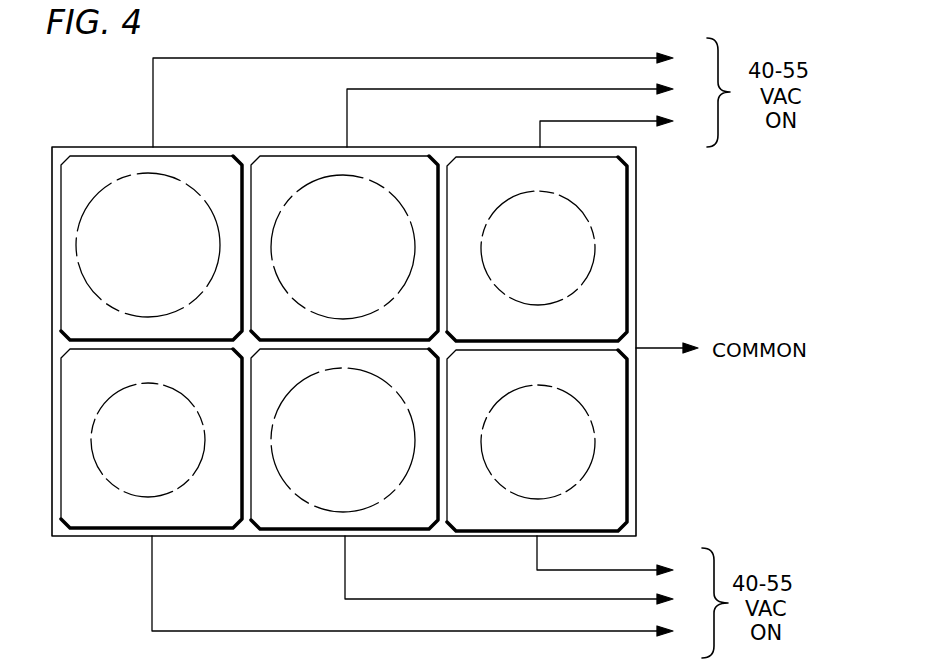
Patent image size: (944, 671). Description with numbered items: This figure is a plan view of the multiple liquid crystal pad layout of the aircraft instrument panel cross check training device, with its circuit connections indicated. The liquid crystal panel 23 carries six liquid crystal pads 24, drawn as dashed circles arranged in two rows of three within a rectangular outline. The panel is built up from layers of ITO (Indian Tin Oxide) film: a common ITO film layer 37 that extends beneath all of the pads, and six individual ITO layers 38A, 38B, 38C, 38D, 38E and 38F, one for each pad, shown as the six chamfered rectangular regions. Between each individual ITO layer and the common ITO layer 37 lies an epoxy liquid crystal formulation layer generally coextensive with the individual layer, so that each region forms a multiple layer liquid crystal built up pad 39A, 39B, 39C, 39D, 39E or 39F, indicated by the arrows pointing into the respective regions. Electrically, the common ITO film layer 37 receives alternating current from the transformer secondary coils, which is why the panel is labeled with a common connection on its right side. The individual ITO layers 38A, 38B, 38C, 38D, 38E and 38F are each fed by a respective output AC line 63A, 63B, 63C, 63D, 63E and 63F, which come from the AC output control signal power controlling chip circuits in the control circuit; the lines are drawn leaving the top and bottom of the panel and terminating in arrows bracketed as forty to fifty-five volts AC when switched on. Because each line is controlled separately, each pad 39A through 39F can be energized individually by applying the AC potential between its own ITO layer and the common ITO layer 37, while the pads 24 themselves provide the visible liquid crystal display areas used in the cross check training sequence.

The liquid crystal panel 23 is at (402, 362).
The liquid crystal pads 24 is at (281, 163).
The common ITO film layer 37 is at (640, 278).
The individual ITO layer 38A is at (84, 158).
The individual ITO layer 38B is at (263, 158).
The individual ITO layer 38C is at (488, 165).
The individual ITO layer 38D is at (620, 497).
The individual ITO layer 38E is at (280, 518).
The individual ITO layer 38F is at (127, 520).
The liquid crystal built up pad 39A is at (130, 140).
The liquid crystal built up pad 39B is at (322, 140).
The liquid crystal built up pad 39C is at (648, 191).
The liquid crystal built up pad 39D is at (638, 422).
The liquid crystal built up pad 39E is at (395, 545).
The liquid crystal built up pad 39F is at (108, 546).
The output AC line 63A is at (468, 57).
The output AC line 63B is at (427, 89).
The output AC line 63C is at (555, 120).
The output AC line 63D is at (632, 570).
The output AC line 63E is at (527, 599).
The output AC line 63F is at (445, 631).